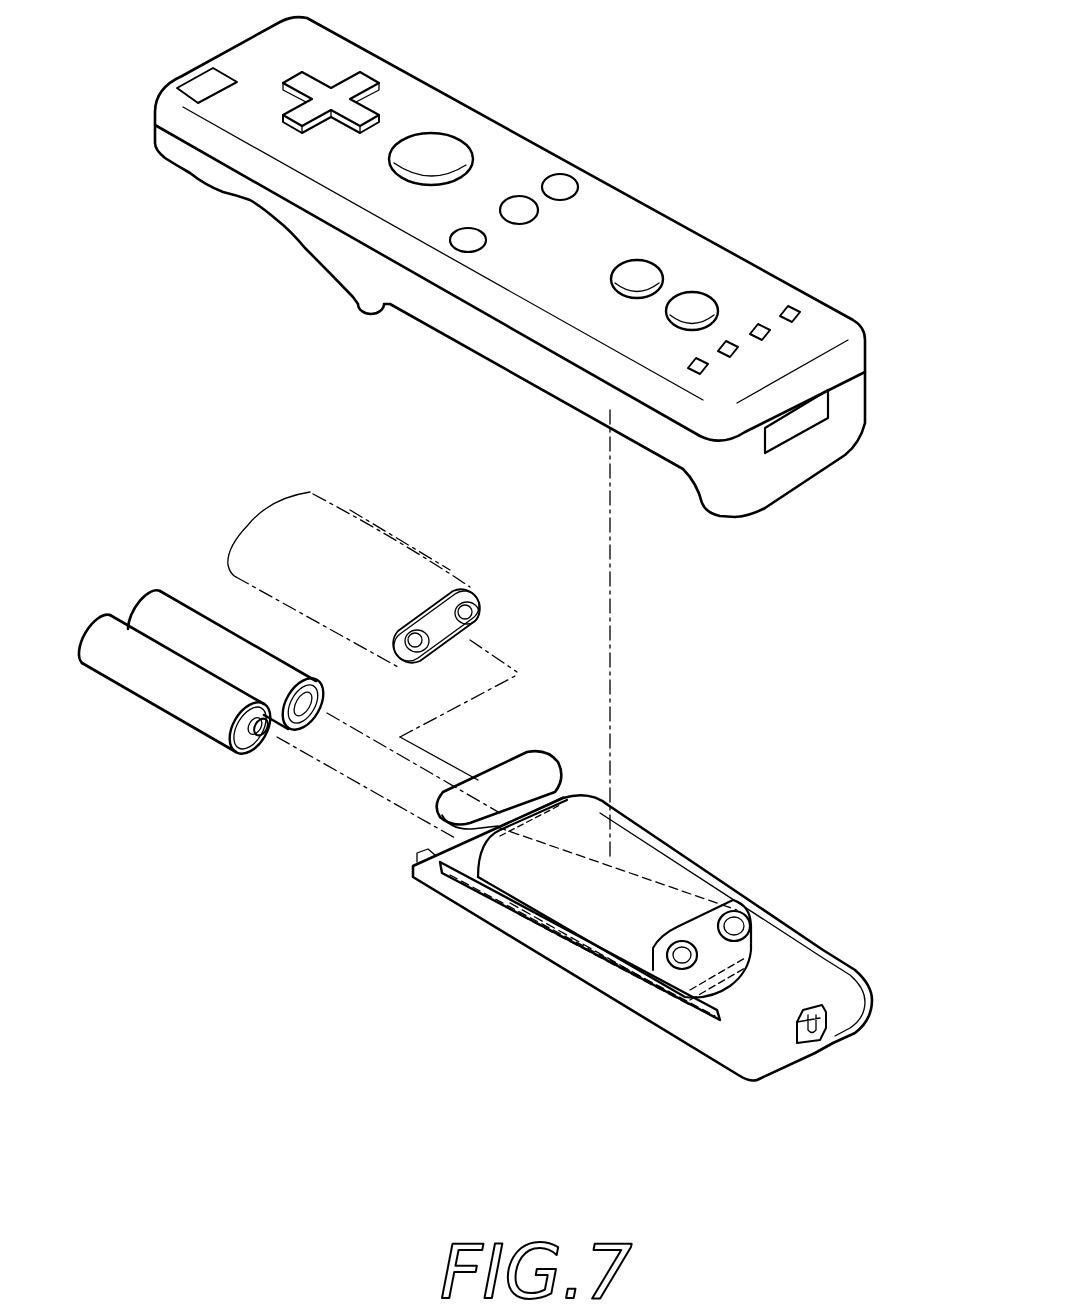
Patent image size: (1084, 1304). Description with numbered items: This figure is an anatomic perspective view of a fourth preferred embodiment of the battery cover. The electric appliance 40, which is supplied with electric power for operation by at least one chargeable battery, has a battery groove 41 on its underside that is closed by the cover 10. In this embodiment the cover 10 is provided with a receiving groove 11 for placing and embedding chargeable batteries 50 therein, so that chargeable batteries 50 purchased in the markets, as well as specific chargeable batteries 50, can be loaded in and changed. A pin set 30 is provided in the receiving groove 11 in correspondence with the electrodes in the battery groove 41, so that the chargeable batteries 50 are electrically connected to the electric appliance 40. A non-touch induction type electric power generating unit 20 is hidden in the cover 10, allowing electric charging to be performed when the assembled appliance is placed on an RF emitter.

The cover 10 is at (853, 977).
The receiving groove 11 is at (666, 881).
The non-touch induction type electric power generating unit 20 is at (640, 993).
The pin set 30 is at (745, 925).
The electric appliance 40 is at (510, 267).
The battery groove 41 is at (558, 400).
The chargeable batteries 50 is at (408, 540).